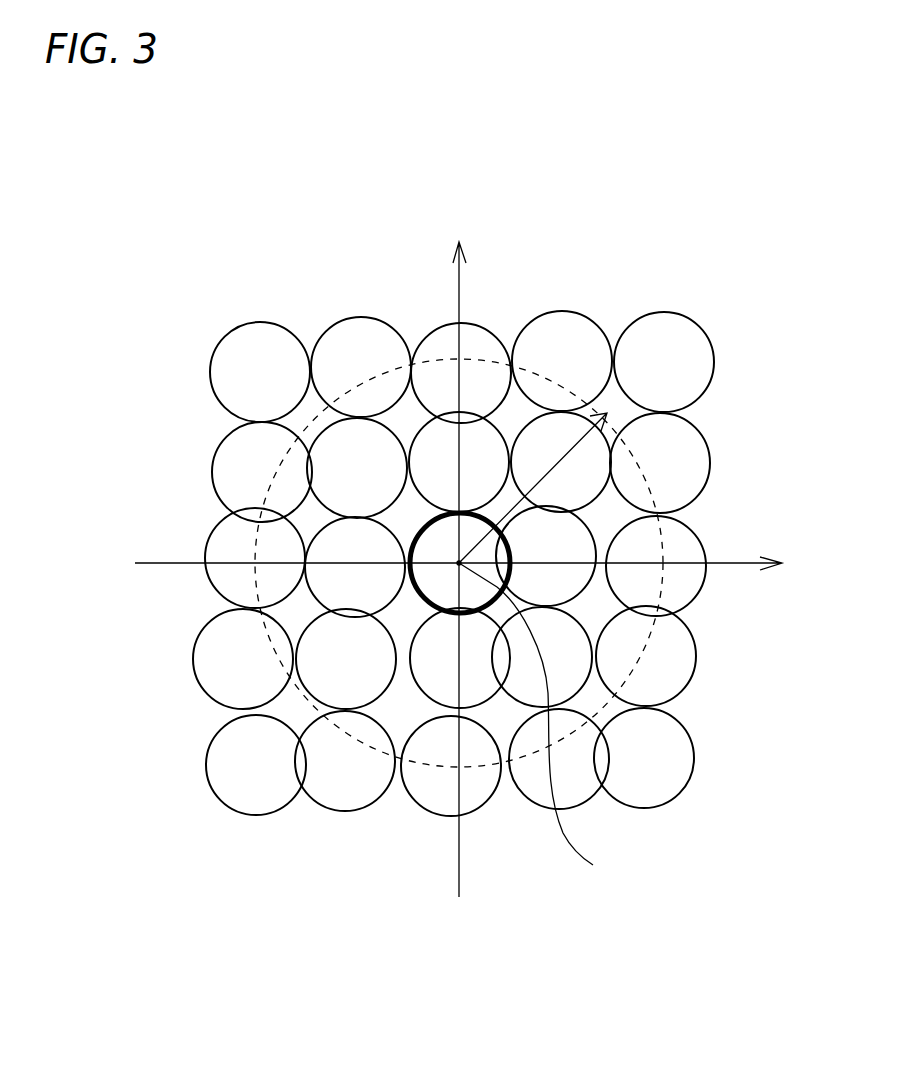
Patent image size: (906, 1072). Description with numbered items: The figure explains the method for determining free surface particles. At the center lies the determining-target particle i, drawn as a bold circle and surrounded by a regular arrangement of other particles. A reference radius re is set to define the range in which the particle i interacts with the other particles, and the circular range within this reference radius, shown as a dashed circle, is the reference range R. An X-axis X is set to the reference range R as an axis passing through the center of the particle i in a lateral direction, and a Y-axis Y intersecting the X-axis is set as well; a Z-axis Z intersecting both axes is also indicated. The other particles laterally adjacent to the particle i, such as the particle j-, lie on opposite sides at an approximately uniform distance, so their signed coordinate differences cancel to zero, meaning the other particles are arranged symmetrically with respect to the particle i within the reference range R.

The X-axis X is at (473, 565).
The Y-axis Y is at (457, 550).
The Z-axis Z is at (536, 728).
The reference range R is at (360, 742).
The reference radius re is at (565, 458).
The determining-target particle i is at (460, 563).
The other particle j- is at (355, 567).